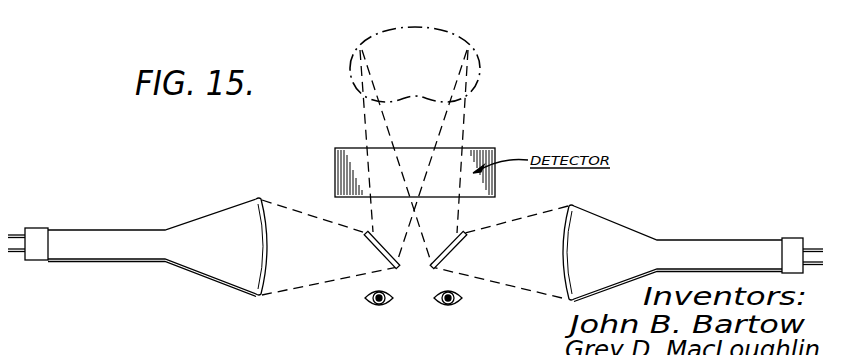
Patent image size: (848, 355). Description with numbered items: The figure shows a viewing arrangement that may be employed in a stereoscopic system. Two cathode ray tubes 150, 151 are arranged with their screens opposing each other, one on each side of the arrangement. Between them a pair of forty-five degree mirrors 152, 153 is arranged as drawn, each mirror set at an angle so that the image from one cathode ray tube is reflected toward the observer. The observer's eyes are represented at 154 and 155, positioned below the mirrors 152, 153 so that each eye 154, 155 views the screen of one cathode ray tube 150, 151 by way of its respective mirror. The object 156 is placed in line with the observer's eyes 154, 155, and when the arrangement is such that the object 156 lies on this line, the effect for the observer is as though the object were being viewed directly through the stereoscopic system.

The cathode ray tube 150 is at (245, 256).
The cathode ray tube 151 is at (614, 265).
The 45° mirror 152 is at (372, 246).
The 45° mirror 153 is at (452, 248).
The observer's eye 154 is at (377, 308).
The observer's eye 155 is at (447, 308).
The object 156 is at (447, 32).